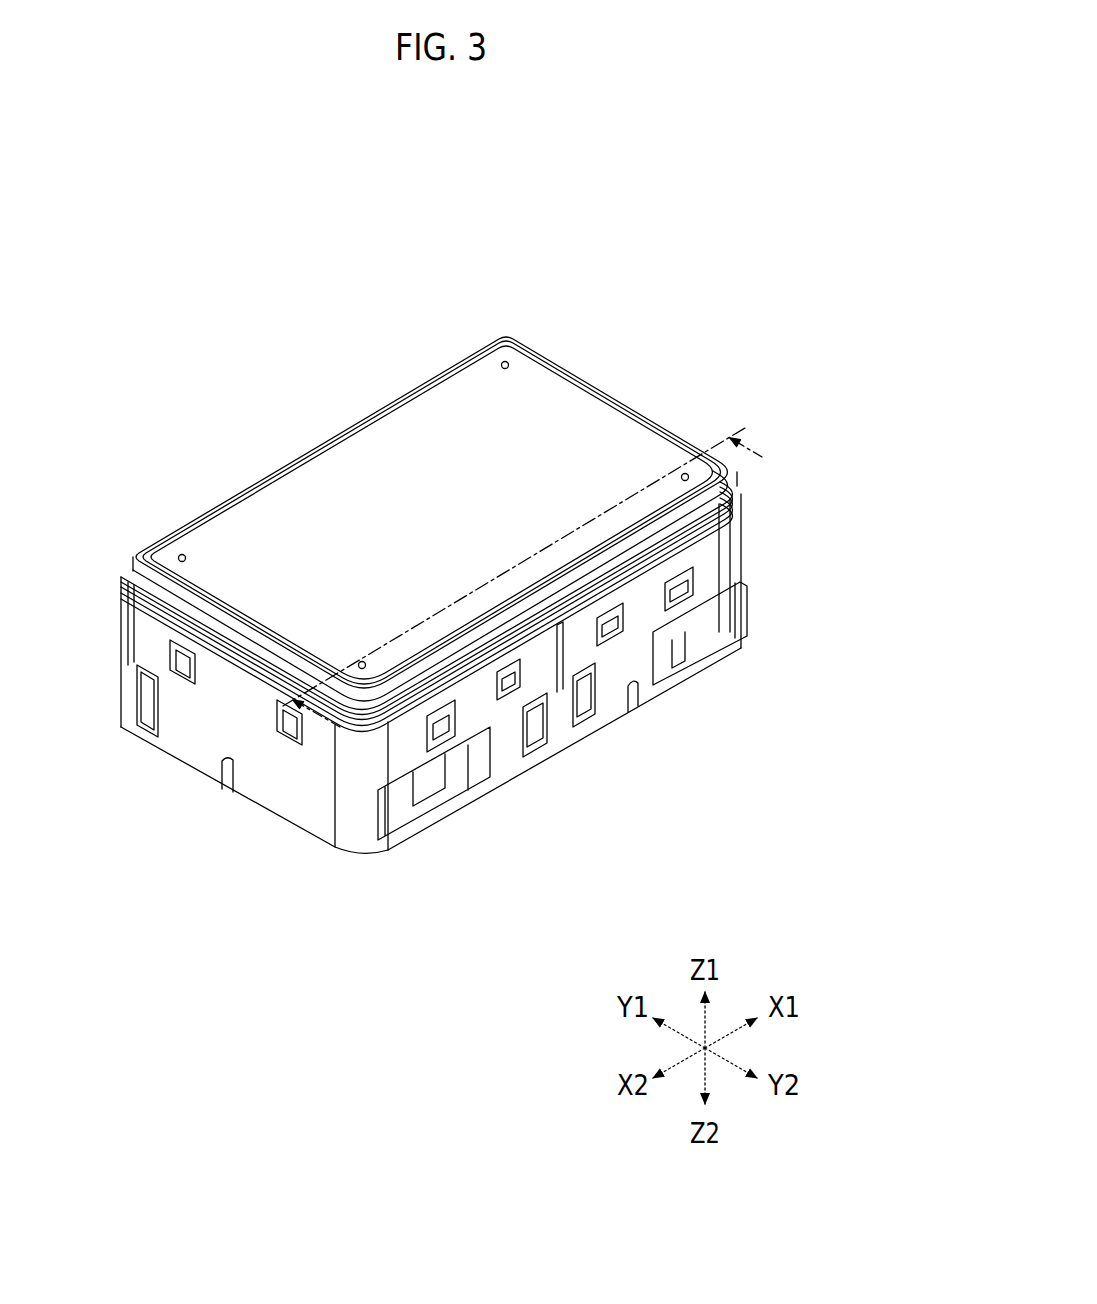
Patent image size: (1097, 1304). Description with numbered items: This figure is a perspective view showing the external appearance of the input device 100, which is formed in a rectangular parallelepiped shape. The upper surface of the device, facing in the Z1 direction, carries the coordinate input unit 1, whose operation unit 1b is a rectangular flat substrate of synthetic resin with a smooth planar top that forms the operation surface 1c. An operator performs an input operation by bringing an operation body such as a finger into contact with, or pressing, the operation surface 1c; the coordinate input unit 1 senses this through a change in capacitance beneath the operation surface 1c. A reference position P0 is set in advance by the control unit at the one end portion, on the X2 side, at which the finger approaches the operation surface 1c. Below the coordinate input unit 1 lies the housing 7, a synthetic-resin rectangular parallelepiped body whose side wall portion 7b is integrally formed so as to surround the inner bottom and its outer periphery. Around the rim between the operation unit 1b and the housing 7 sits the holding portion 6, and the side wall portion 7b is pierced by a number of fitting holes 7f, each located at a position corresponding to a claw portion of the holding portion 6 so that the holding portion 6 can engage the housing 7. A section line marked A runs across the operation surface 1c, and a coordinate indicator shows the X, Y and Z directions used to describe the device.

The input device 100 is at (616, 134).
The coordinate input unit 1 is at (450, 370).
The operation unit 1b is at (435, 586).
The operation surface 1c is at (376, 490).
The reference position P0 is at (193, 578).
The holding portion 6 is at (121, 575).
The housing 7 is at (568, 728).
The side wall portion 7b is at (229, 738).
The fitting hole 7f is at (184, 667).
The section line A is at (532, 593).